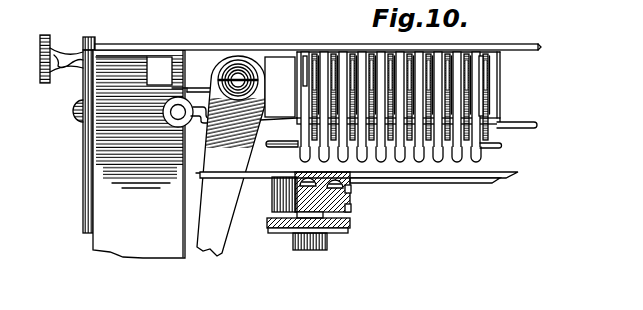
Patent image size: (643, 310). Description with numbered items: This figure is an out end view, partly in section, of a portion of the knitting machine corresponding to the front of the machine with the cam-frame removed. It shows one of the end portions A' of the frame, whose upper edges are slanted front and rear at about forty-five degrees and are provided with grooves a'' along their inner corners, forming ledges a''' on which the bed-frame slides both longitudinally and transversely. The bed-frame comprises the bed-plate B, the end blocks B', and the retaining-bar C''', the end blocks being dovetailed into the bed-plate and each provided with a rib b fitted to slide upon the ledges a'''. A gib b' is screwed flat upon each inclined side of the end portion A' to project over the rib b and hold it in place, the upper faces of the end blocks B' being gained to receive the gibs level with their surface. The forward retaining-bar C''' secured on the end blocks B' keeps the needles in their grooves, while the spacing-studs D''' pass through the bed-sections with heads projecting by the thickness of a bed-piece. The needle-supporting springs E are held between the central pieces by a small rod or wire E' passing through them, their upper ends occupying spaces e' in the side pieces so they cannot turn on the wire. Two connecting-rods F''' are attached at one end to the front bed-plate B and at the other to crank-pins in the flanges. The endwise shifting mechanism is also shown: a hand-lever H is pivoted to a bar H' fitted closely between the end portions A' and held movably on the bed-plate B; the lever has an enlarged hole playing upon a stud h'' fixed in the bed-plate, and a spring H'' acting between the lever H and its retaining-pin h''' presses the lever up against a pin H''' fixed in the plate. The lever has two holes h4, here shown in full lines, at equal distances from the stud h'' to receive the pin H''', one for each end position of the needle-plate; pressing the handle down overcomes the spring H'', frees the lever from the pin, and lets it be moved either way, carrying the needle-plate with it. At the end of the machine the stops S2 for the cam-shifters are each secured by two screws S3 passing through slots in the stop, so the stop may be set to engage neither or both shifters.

The screws S3 is at (76, 106).
The stops S2 is at (83, 203).
The end portions A' is at (139, 154).
The grooves a'' is at (129, 80).
The gib b' is at (318, 39).
The rib b is at (166, 71).
The ledges a''' is at (191, 76).
The connecting-rods F''' is at (232, 156).
The end blocks B' is at (250, 78).
The retaining-bar C''' is at (288, 82).
The bed-plate B is at (357, 159).
The bar H' is at (437, 188).
The spacing-stud D''' is at (398, 81).
The springs E is at (390, 128).
The spaces e' is at (394, 86).
The rod or wire E' is at (508, 141).
The pin H''' is at (271, 194).
The hand-lever H is at (331, 195).
The holes h4 is at (349, 190).
The spring H'' is at (304, 241).
The retaining-pin h''' is at (294, 231).
The stud h'' is at (310, 249).